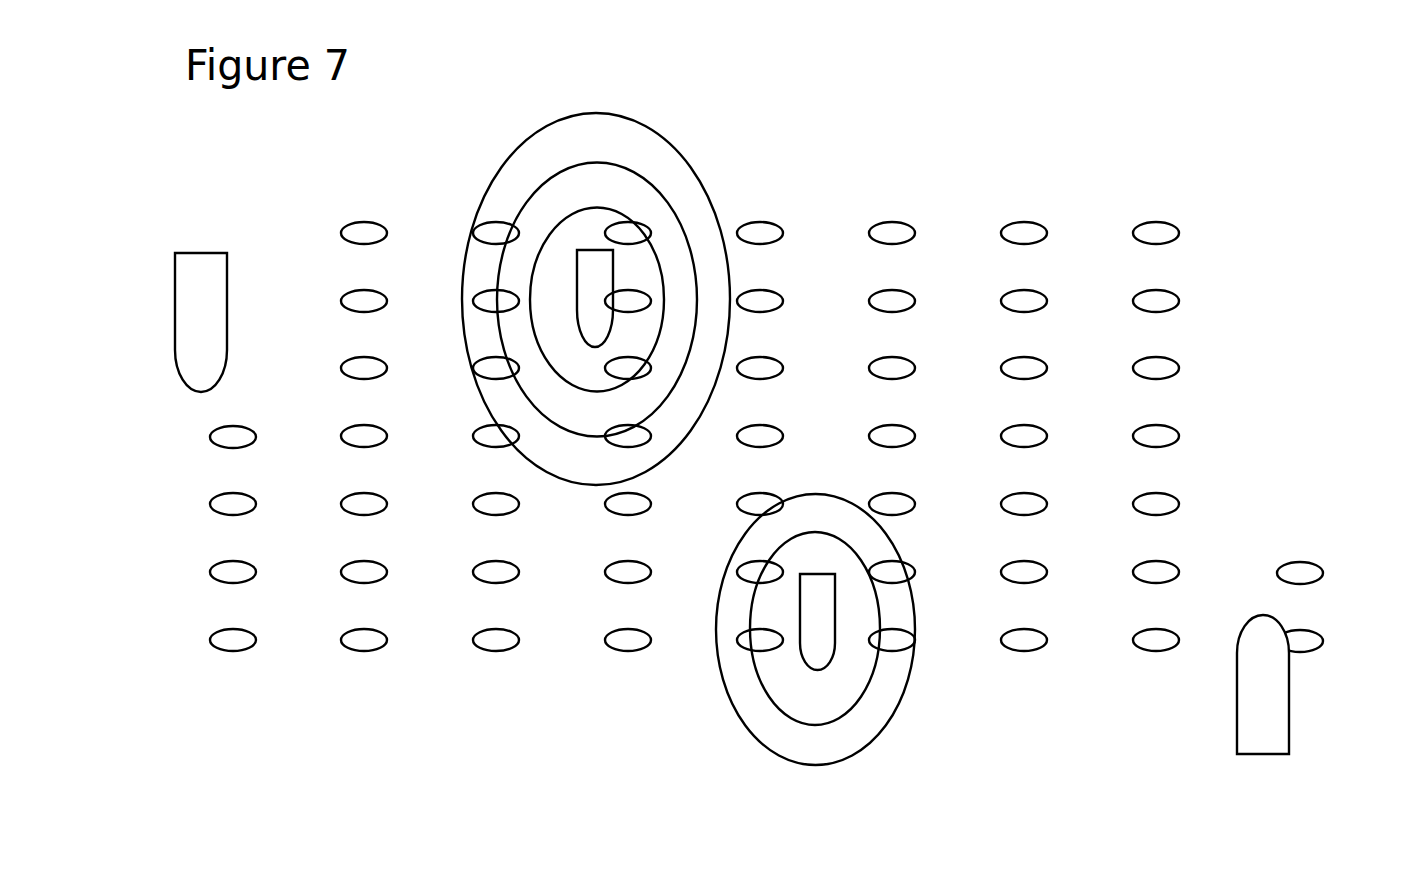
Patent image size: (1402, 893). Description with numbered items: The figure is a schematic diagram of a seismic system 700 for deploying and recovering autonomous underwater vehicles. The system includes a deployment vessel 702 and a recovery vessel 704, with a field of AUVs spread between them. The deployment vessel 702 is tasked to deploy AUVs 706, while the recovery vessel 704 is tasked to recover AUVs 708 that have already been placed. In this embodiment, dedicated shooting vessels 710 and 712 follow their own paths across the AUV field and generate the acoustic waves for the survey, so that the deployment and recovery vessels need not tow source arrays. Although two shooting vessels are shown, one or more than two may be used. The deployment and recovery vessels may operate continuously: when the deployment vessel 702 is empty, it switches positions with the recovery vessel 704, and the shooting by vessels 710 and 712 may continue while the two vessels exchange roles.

The seismic system 700 is at (920, 152).
The deployment vessel 702 is at (1289, 703).
The recovery vessel 704 is at (185, 303).
The AUV 706 is at (1297, 560).
The AUV 708 is at (220, 438).
The shooting vessel 710 is at (583, 272).
The shooting vessel 712 is at (822, 642).